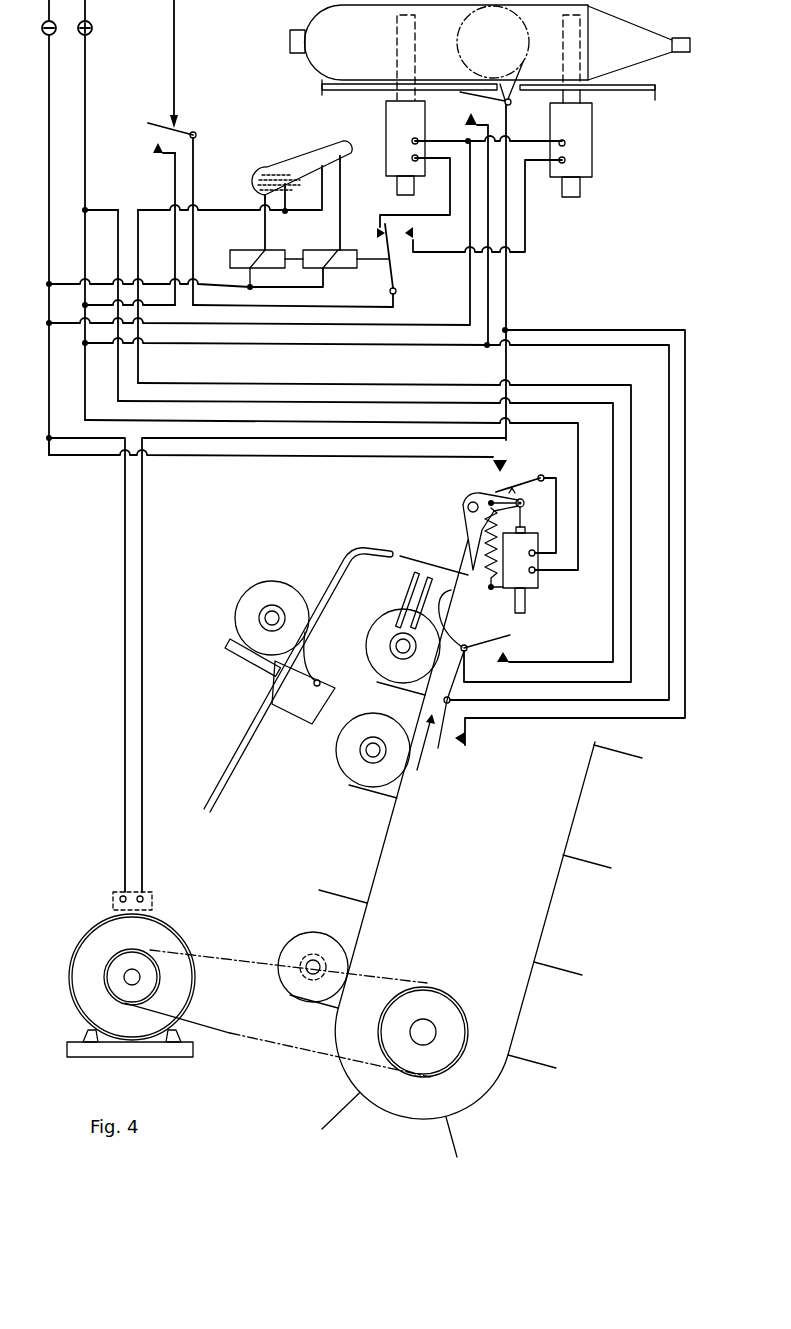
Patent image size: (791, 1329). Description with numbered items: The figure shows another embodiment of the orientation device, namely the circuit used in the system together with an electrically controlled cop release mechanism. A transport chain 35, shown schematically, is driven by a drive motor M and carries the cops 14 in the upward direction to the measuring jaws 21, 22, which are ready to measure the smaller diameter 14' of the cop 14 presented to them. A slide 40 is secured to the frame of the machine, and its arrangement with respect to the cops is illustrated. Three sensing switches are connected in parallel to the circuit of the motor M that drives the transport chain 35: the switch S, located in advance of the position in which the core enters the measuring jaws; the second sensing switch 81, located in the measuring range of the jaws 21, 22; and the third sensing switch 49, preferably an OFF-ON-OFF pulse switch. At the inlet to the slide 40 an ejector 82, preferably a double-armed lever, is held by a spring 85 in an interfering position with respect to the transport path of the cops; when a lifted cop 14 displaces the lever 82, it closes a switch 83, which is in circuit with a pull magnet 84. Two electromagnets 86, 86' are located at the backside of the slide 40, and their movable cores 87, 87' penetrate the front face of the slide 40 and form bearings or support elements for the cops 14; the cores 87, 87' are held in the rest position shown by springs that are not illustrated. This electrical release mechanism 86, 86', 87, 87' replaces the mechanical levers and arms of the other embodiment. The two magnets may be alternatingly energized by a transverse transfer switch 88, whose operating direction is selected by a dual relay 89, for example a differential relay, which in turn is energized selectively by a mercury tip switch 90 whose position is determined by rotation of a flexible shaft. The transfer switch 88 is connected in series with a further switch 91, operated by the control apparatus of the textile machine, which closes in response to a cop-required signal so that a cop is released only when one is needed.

The cop 14 is at (477, 503).
The smaller diameter 14' is at (387, 646).
The measuring jaw 21 is at (417, 570).
The measuring jaw 22 is at (430, 575).
The transport chain 35 is at (380, 872).
The slide 40 is at (622, 88).
The third sensing switch 49 is at (308, 658).
The second sensing switch 81 is at (457, 634).
The ejector 82 is at (467, 524).
The switch 83 is at (510, 475).
The pull magnet 84 is at (540, 577).
The spring 85 is at (490, 572).
The electro-magnet 86 is at (339, 426).
The electro-magnet 86' is at (571, 150).
The movable core 87 is at (291, 353).
The movable core 87' is at (594, 59).
The transfer switch 88 is at (403, 248).
The dual relay 89 is at (282, 241).
The mercury tip switch 90 is at (307, 160).
The further switch 91 is at (158, 134).
The drive motor M is at (158, 934).
The switch S is at (426, 751).